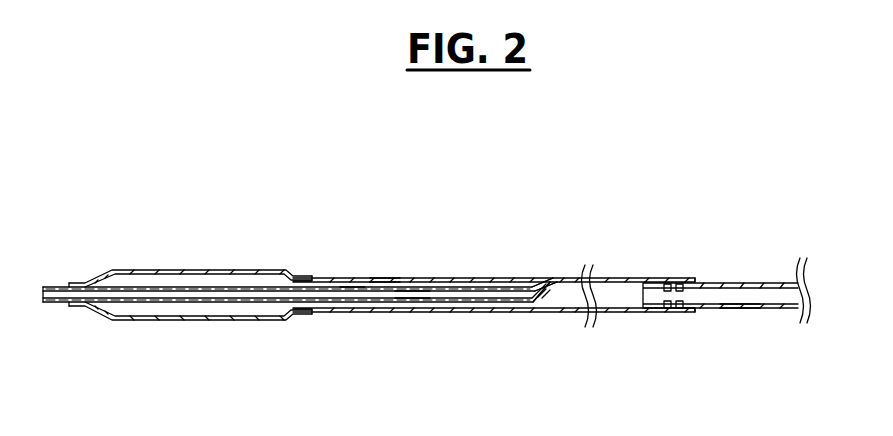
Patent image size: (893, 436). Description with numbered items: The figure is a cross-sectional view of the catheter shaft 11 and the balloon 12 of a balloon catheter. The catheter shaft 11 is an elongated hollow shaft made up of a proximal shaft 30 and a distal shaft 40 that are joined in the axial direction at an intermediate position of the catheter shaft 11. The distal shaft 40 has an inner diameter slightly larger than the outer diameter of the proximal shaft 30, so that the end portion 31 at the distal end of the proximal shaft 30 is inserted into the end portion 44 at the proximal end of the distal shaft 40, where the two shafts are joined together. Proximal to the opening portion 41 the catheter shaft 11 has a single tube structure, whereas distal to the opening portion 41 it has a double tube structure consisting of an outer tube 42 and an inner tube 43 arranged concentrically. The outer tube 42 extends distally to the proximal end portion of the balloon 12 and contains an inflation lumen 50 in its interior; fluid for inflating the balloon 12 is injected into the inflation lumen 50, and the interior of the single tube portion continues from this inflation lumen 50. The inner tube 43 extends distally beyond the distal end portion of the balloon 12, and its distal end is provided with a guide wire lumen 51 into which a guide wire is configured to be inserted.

The catheter shaft 11 is at (737, 310).
The balloon 12 is at (198, 268).
The proximal shaft 30 is at (763, 281).
The end portion 31 is at (688, 312).
The distal shaft 40 is at (437, 280).
The opening portion 41 is at (550, 280).
The outer tube 42 is at (385, 280).
The inner tube 43 is at (352, 287).
The end portion 44 is at (652, 311).
The inflation lumen 50 is at (468, 305).
The guide wire lumen 51 is at (413, 296).